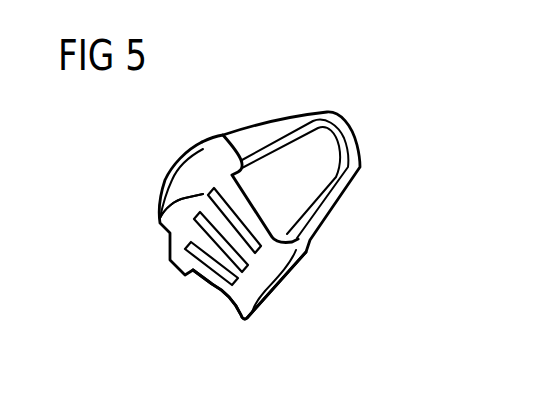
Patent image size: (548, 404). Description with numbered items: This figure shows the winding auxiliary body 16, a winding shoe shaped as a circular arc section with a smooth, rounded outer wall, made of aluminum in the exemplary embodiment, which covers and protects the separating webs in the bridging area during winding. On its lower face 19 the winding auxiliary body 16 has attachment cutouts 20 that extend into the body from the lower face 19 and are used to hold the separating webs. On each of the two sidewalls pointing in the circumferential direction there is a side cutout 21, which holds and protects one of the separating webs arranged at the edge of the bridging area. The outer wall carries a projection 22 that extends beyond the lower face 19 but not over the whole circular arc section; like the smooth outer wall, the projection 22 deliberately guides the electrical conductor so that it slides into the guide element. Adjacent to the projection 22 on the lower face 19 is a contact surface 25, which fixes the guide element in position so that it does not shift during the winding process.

The winding auxiliary body 16 is at (252, 219).
The lower face 19 is at (223, 282).
The attachment cutouts 20 is at (217, 229).
The side cutout 21 is at (291, 182).
The projection 22 is at (176, 162).
The contact surface 25 is at (183, 199).